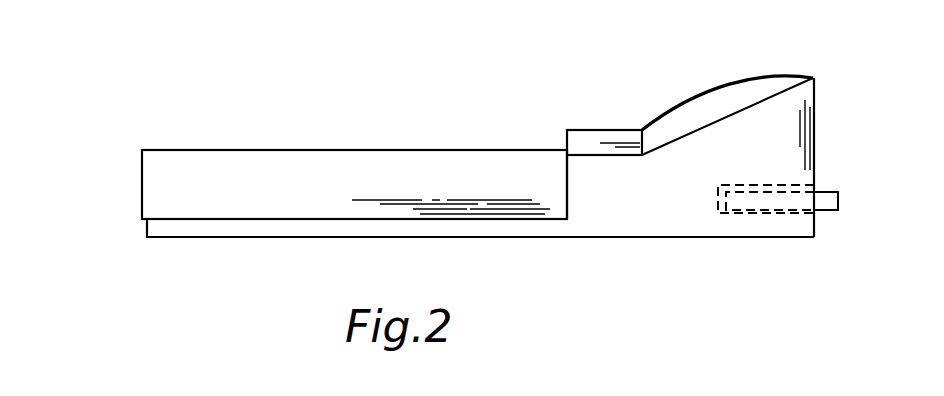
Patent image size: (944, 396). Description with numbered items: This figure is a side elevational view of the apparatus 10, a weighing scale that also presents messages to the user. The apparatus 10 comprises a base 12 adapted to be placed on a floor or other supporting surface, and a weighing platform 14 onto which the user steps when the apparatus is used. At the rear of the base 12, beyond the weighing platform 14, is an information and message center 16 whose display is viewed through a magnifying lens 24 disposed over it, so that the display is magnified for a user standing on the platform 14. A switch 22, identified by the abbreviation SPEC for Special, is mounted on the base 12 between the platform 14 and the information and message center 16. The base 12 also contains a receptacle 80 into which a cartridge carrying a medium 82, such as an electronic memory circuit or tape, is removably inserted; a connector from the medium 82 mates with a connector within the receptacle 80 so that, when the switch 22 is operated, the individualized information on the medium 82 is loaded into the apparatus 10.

The apparatus 10 is at (645, 238).
The base 12 is at (265, 238).
The weighing platform 14 is at (318, 149).
The information and message center 16 is at (745, 107).
The switch 22 is at (590, 130).
The magnifying lens 24 is at (697, 90).
The receptacle 80 is at (773, 215).
The medium 82 is at (738, 212).